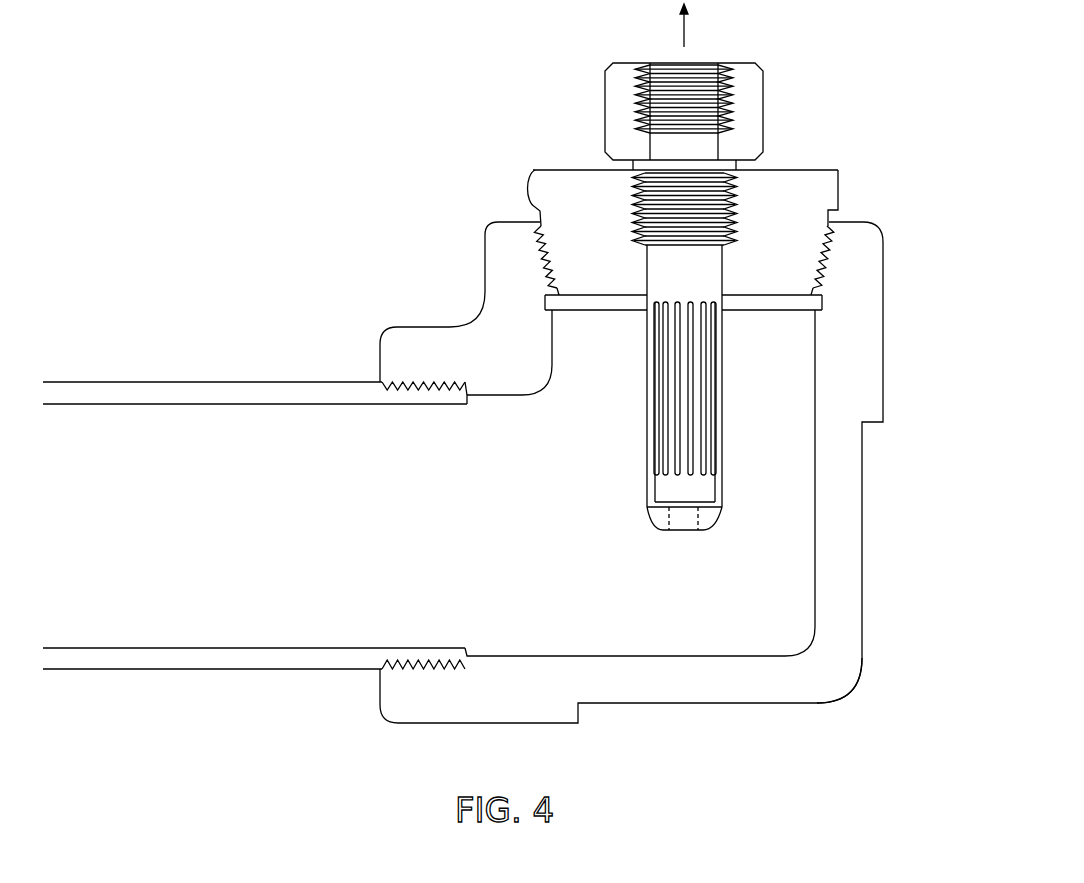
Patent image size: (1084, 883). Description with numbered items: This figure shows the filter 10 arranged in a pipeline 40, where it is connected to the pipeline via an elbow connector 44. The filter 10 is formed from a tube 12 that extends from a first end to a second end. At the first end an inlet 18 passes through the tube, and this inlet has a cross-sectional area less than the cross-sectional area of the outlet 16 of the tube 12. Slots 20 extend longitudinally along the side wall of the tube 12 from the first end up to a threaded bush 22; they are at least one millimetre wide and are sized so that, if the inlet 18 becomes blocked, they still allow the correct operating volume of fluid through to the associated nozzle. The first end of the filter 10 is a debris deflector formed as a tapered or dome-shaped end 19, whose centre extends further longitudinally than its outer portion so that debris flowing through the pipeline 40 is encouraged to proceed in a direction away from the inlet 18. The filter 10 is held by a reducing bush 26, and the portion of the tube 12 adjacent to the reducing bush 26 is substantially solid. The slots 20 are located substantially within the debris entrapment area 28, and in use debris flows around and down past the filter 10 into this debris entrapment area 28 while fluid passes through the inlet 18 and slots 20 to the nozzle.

The filter 10 is at (647, 490).
The tube 12 is at (723, 495).
The outlet 16 is at (703, 63).
The inlet 18 is at (683, 520).
The dome-shaped end 19 is at (657, 527).
The slots 20 is at (718, 443).
The threaded bush 22 is at (737, 222).
The reducing bush 26 is at (793, 185).
The debris entrapment area 28 is at (783, 363).
The pipeline 40 is at (217, 670).
The elbow connector 44 is at (837, 693).